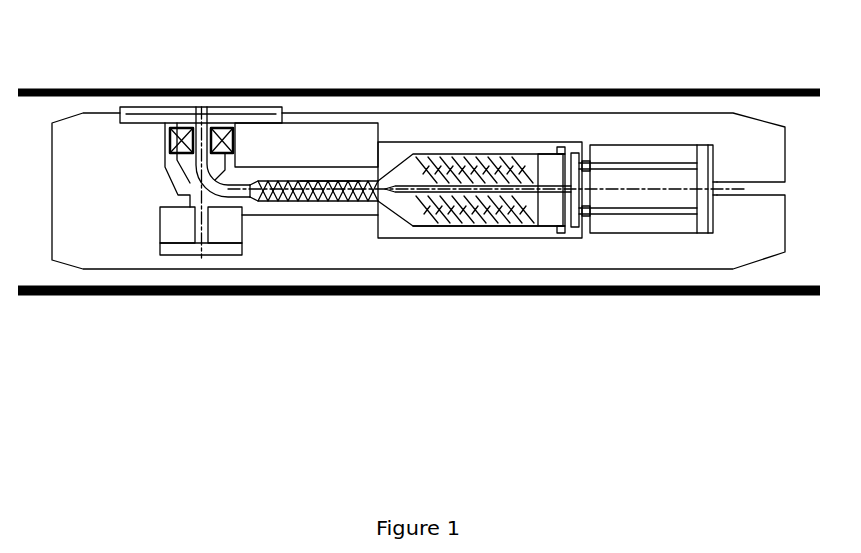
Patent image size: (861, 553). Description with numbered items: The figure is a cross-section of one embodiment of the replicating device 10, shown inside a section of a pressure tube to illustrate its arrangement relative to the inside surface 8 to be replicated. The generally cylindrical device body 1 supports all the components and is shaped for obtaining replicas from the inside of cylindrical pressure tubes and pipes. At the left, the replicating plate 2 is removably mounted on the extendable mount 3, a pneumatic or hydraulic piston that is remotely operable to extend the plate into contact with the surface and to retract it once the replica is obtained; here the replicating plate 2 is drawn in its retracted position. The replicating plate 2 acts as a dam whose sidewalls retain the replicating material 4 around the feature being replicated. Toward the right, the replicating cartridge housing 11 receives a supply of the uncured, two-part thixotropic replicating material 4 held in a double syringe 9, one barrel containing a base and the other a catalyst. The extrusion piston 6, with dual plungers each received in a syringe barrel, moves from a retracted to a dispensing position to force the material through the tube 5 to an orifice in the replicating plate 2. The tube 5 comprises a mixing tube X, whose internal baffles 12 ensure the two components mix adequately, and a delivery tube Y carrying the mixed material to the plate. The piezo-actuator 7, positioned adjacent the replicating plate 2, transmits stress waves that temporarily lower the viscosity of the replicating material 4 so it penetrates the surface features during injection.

The device body 1 is at (75, 104).
The replicating plate 2 is at (266, 96).
The extendable mount 3 is at (170, 218).
The replicating material 4 is at (490, 145).
The tube 5 is at (244, 213).
The extrusion piston 6 is at (620, 135).
The piezo-actuator 7 is at (217, 128).
The inside surface 8 is at (740, 83).
The double syringe 9 is at (399, 248).
The replicating device 10 is at (68, 290).
The replicating cartridge housing 11 is at (492, 238).
The internal baffles 12 is at (285, 213).
The mixing tube X is at (327, 172).
The delivery tube Y is at (222, 213).